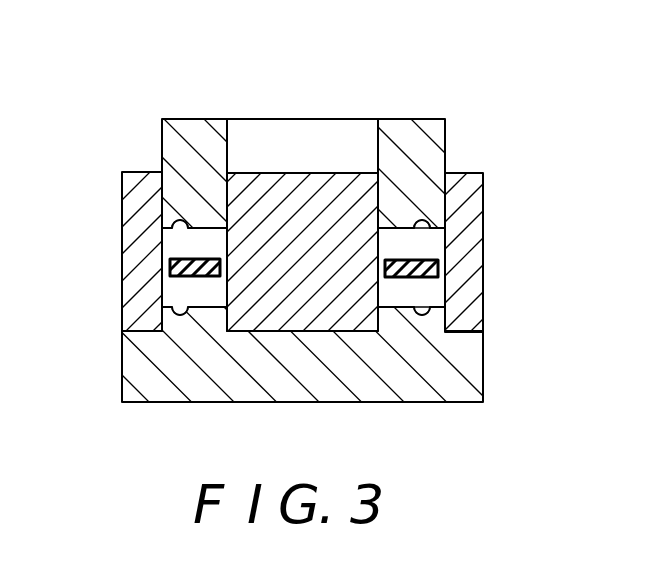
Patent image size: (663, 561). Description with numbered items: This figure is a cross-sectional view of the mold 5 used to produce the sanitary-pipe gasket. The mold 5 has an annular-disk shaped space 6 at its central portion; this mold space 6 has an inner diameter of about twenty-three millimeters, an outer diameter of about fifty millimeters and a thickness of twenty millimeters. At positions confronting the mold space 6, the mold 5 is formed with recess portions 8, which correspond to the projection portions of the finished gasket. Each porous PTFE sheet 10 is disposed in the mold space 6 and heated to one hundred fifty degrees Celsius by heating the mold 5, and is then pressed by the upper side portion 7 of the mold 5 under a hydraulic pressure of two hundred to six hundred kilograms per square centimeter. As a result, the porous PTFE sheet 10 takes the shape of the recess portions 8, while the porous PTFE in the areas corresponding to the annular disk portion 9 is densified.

The mold 5 is at (314, 216).
The annular-disk shaped space 6 is at (433, 250).
The upper side portion 7 is at (188, 118).
The recess portions 8 is at (183, 218).
The annular disk portion 9 is at (411, 221).
The porous PTFE sheet 10 is at (168, 271).